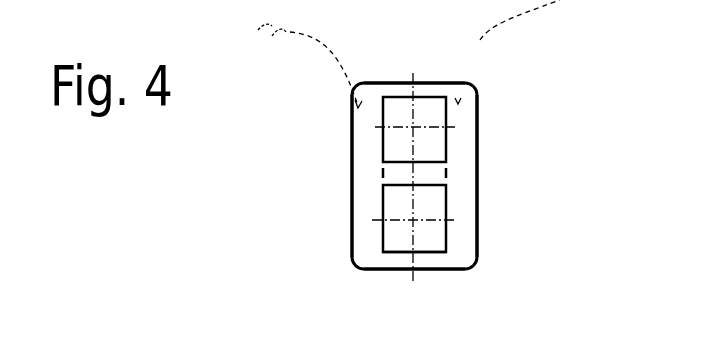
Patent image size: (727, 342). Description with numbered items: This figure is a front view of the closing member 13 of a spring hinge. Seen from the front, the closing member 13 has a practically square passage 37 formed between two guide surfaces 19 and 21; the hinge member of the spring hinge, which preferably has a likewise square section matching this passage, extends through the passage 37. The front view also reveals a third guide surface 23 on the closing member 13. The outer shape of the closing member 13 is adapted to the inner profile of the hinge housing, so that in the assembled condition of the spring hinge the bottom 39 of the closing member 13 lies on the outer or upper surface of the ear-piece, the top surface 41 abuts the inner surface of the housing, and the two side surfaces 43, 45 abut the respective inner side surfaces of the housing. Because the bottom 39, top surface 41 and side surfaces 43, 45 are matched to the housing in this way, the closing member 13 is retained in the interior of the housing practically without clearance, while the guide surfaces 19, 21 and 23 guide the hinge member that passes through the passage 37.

The closing member 13 is at (347, 153).
The top surface 41 is at (392, 78).
The side surface 43 is at (351, 202).
The side surface 45 is at (480, 148).
The bottom 39 is at (440, 270).
The third guide surface 23 is at (424, 136).
The guide surface 21 is at (426, 194).
The passage 37 is at (426, 237).
The guide surface 19 is at (400, 252).